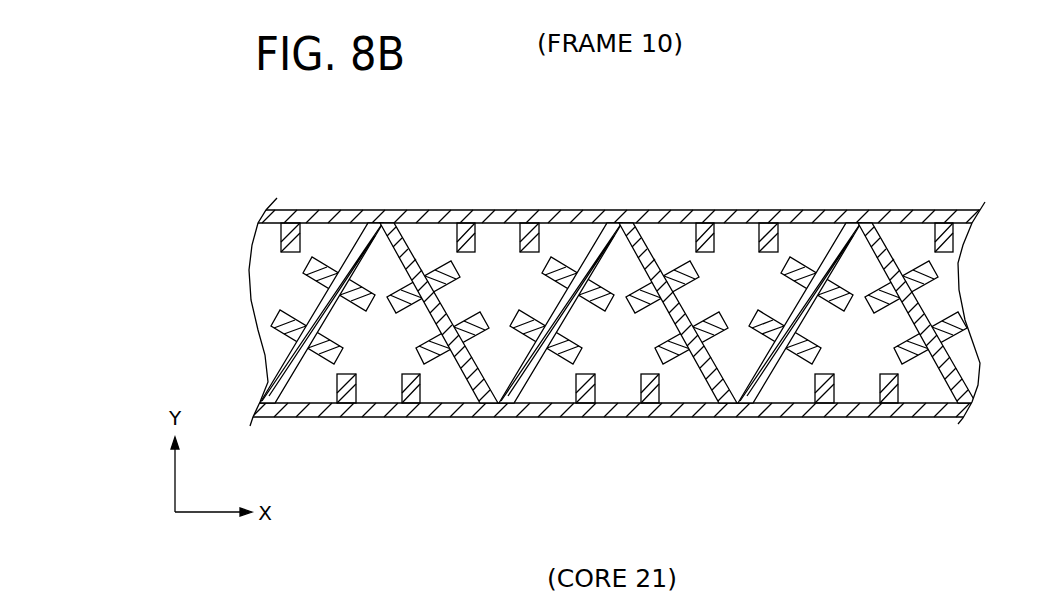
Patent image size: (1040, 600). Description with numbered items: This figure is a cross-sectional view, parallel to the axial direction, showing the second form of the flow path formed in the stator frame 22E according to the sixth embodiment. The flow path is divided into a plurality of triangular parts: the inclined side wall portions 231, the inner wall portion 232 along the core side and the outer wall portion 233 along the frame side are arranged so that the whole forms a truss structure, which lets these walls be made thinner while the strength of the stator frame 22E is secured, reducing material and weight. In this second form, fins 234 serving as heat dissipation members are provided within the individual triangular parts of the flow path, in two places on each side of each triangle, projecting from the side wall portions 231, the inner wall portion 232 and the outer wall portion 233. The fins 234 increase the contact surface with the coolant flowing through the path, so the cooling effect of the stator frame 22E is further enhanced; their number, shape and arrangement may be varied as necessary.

The stator frame 22E is at (938, 170).
The side wall portion 231 is at (590, 240).
The inner wall portion 232 is at (528, 407).
The outer wall portion 233 is at (768, 210).
The fin 234 is at (466, 240).